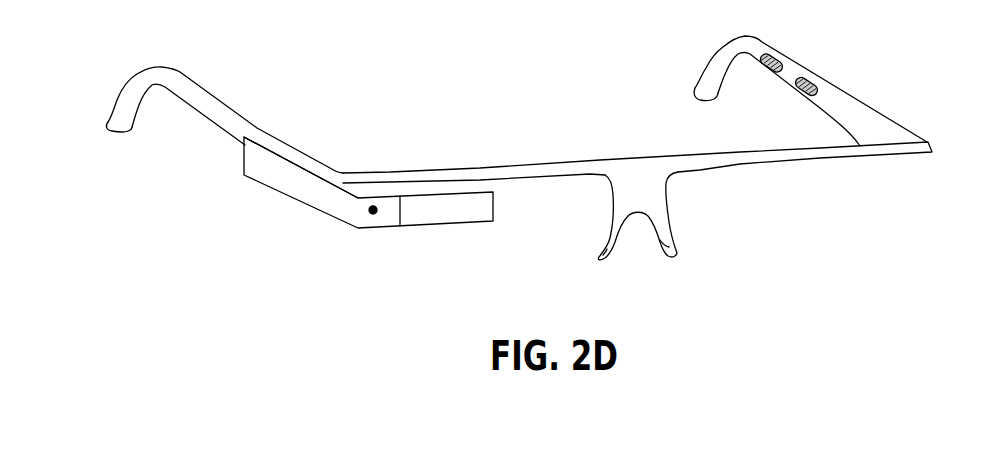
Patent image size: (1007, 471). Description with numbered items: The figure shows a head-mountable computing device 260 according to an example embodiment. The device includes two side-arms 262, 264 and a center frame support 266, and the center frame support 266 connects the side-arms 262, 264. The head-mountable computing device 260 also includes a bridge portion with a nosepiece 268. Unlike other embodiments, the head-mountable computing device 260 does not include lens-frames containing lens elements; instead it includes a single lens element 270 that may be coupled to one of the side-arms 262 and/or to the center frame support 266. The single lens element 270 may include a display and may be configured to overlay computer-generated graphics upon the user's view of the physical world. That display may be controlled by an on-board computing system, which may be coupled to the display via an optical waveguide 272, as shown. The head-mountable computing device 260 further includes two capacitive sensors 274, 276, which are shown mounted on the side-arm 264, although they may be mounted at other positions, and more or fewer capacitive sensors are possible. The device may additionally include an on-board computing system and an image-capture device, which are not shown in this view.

The head-mountable computing device 260 is at (552, 151).
The side-arm 262 is at (207, 108).
The side-arm 264 is at (790, 72).
The center frame support 266 is at (538, 168).
The nosepiece 268 is at (658, 207).
The single lens element 270 is at (450, 223).
The optical waveguide 272 is at (372, 214).
The capacitive sensor 274 is at (760, 66).
The capacitive sensor 276 is at (795, 90).